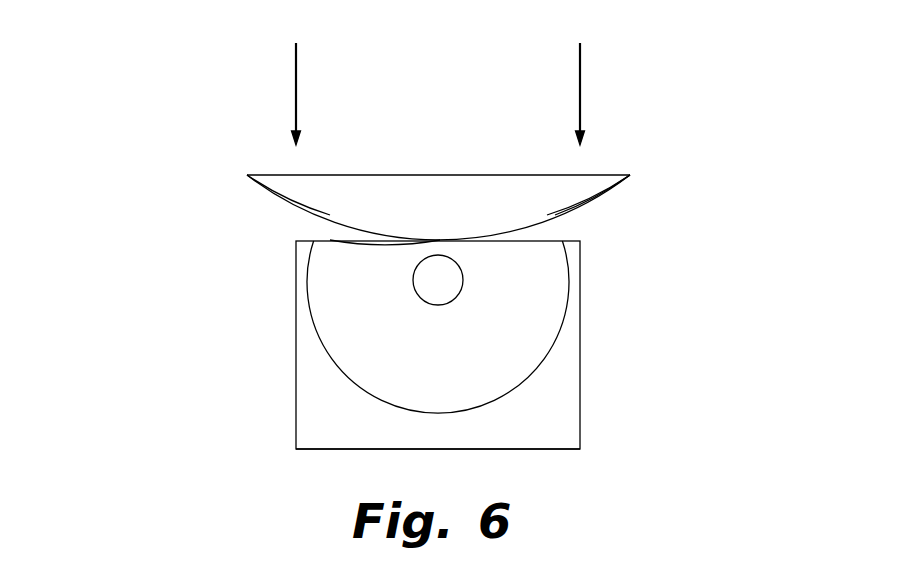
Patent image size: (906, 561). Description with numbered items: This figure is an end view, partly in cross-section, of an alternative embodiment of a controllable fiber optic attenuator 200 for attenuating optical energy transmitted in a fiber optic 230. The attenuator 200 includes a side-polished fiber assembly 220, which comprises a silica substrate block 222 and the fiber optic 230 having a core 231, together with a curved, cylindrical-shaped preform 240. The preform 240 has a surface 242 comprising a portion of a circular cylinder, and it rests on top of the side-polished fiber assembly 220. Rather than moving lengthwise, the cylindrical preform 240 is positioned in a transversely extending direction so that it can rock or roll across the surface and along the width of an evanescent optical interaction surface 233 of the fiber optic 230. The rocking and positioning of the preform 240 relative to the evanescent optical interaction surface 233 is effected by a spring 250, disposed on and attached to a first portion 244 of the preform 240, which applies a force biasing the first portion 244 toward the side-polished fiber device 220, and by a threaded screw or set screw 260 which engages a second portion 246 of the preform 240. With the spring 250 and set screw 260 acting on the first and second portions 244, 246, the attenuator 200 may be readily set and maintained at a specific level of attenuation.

The attenuator 200 is at (183, 125).
The side-polished fiber assembly 220 is at (290, 402).
The silica substrate block 222 is at (327, 431).
The fiber optic 230 is at (556, 375).
The core 231 is at (438, 280).
The evanescent optical interaction surface 233 is at (333, 241).
The preform 240 is at (421, 164).
The surface 242 is at (555, 215).
The first portion 244 is at (296, 190).
The second portion 246 is at (583, 190).
The spring 250 is at (310, 72).
The set screw 260 is at (592, 72).